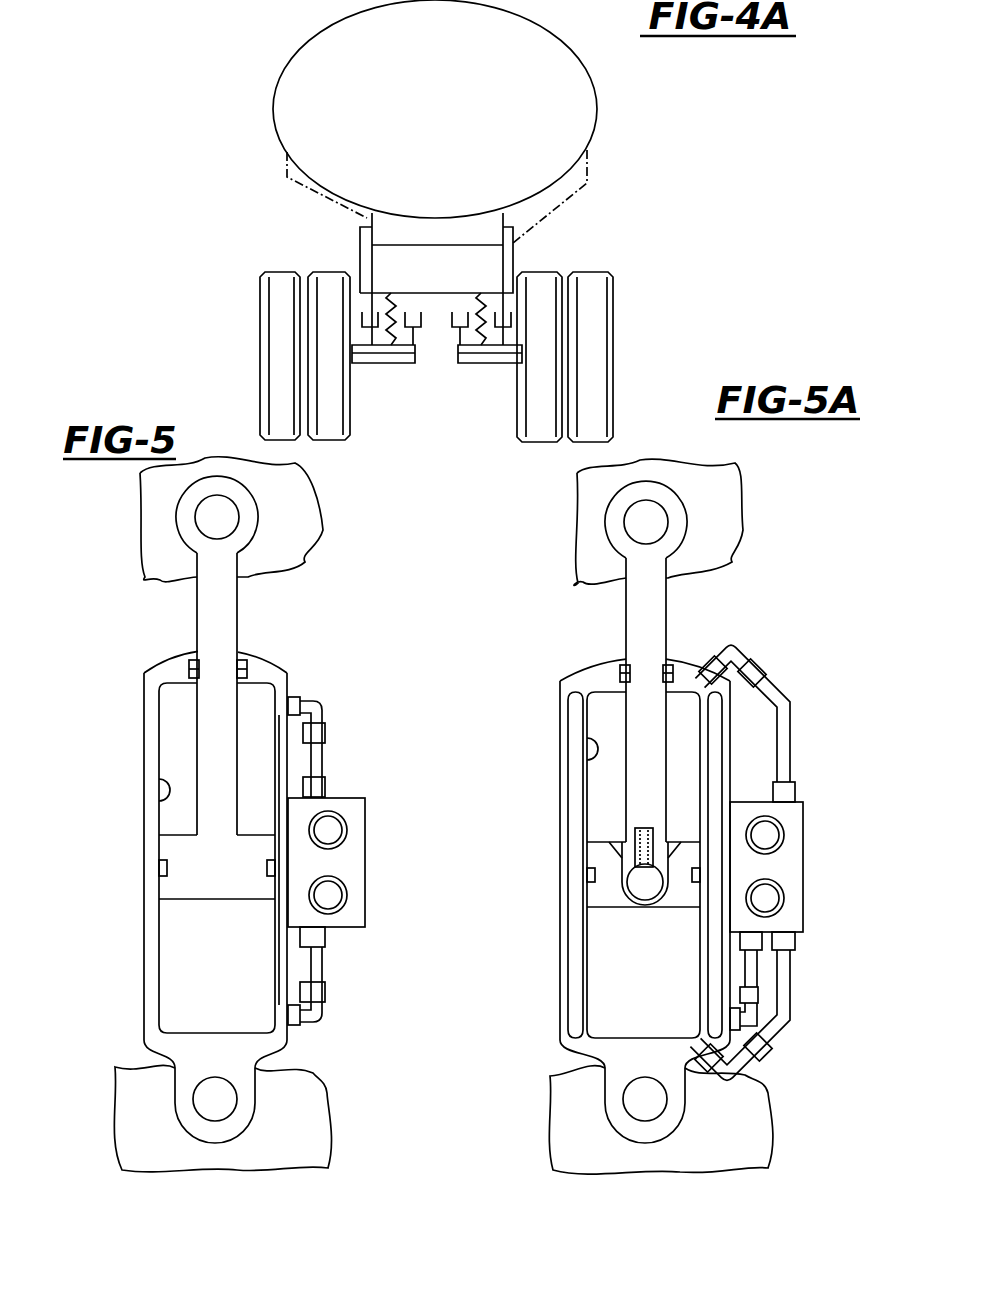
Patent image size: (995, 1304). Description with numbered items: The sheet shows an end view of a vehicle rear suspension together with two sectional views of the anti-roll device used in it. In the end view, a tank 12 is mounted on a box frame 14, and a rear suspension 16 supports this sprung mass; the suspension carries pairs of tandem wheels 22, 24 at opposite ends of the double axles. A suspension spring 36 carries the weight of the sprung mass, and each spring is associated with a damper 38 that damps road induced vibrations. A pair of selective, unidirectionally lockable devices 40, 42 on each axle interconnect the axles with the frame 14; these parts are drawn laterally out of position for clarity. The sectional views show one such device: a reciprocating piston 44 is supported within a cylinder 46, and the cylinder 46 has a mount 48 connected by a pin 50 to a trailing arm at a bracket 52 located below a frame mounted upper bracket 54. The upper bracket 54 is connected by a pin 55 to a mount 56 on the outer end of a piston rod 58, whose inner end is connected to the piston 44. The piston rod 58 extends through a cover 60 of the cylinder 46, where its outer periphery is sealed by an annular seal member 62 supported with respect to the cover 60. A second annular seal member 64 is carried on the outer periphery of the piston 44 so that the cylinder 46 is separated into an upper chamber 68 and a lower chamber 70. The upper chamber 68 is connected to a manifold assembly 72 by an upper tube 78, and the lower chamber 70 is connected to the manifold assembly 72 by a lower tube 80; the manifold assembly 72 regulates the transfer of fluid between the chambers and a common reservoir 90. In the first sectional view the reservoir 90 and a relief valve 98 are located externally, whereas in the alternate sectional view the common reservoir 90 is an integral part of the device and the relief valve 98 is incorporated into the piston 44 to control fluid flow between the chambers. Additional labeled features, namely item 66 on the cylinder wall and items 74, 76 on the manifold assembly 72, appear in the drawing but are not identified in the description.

In FIG. 4A, the tank 12 is at (277, 83).
In FIG. 4A, the box frame 14 is at (513, 260).
In FIG. 4A, the rear suspension 16 is at (435, 372).
In FIG. 4A, the tandem wheel 22 is at (281, 276).
In FIG. 4A, the tandem wheel 24 is at (332, 273).
In FIG. 4A, the suspension spring 36 is at (477, 300).
In FIG. 4A, the damper 38 is at (450, 315).
In FIG. 4A, the selective, unidirectionally lockable device 40 is at (367, 313).
In FIG. 5, the selective, unidirectionally lockable device 40 is at (240, 814).
In FIG. 4A, the selective, unidirectionally lockable device 42 is at (508, 320).
In FIG. 5, the reciprocating piston 44 is at (183, 893).
In FIG. 5A, the reciprocating piston 44 is at (607, 900).
In FIG. 5, the cylinder 46 is at (143, 965).
In FIG. 5A, the cylinder 46 is at (572, 1043).
In FIG. 5, the mount 48 is at (175, 1125).
In FIG. 5A, the mount 48 is at (612, 1120).
In FIG. 5, the pin 50 is at (232, 1103).
In FIG. 5A, the pin 50 is at (660, 1110).
In FIG. 5, the bracket 52 is at (133, 1072).
In FIG. 5A, the bracket 52 is at (562, 1093).
In FIG. 5, the upper bracket 54 is at (300, 557).
In FIG. 5A, the upper bracket 54 is at (732, 560).
In FIG. 5, the pin 55 is at (233, 518).
In FIG. 5A, the pin 55 is at (660, 515).
In FIG. 5, the mount 56 is at (187, 533).
In FIG. 5A, the mount 56 is at (612, 525).
In FIG. 5, the piston rod 58 is at (225, 617).
In FIG. 5A, the piston rod 58 is at (657, 620).
In FIG. 5, the cover 60 is at (158, 670).
In FIG. 5A, the cover 60 is at (583, 668).
In FIG. 5, the annular seal member 62 is at (190, 673).
In FIG. 5A, the annular seal member 62 is at (620, 675).
In FIG. 5, the annular seal member 64 is at (158, 870).
In FIG. 5A, the annular seal member 64 is at (587, 873).
In FIG. 5, the fluid port 66 is at (160, 800).
In FIG. 5A, the fluid port 66 is at (587, 760).
In FIG. 5, the upper chamber 68 is at (272, 778).
In FIG. 5A, the upper chamber 68 is at (698, 763).
In FIG. 5, the lower chamber 70 is at (230, 978).
In FIG. 5A, the lower chamber 70 is at (661, 978).
In FIG. 5, the manifold assembly 72 is at (368, 794).
In FIG. 5A, the manifold assembly 72 is at (804, 804).
In FIG. 5, the valve port 74 is at (345, 837).
In FIG. 5A, the valve port 74 is at (785, 842).
In FIG. 5, the valve port 76 is at (347, 897).
In FIG. 5A, the valve port 76 is at (785, 903).
In FIG. 5, the upper tube 78 is at (317, 713).
In FIG. 5A, the upper tube 78 is at (787, 697).
In FIG. 5, the lower tube 80 is at (317, 970).
In FIG. 5A, the lower tube 80 is at (790, 1007).
In FIG. 5A, the common reservoir 90 is at (570, 962).
In FIG. 5A, the relief valve 98 is at (637, 853).